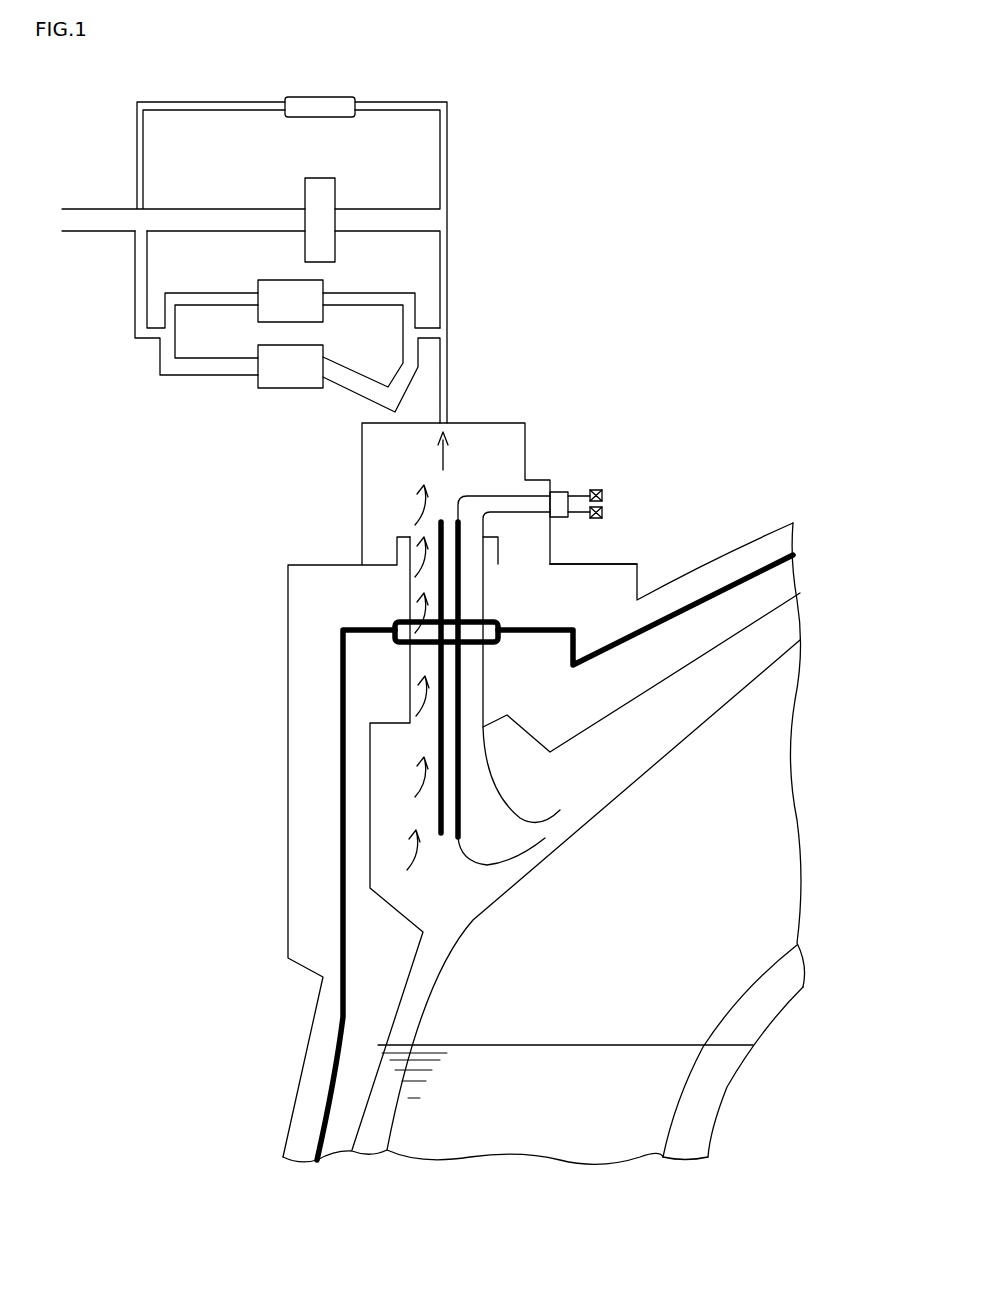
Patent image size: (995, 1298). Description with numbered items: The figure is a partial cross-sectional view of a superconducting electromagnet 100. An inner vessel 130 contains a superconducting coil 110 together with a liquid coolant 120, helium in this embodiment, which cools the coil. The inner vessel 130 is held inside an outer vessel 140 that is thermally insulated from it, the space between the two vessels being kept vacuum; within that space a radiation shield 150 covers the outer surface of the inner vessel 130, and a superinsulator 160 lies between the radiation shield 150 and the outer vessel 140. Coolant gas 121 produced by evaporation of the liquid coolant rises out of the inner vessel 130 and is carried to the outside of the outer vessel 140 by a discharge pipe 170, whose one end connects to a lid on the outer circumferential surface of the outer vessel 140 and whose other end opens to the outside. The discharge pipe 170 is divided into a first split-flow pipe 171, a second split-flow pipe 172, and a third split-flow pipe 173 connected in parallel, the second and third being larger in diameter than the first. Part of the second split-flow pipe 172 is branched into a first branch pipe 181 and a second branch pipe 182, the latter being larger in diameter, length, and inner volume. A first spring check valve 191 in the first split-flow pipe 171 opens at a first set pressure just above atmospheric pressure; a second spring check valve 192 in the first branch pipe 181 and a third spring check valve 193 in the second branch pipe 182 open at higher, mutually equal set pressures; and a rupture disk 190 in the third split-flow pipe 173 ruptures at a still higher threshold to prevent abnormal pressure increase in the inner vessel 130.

The superconducting electromagnet 100 is at (729, 205).
The superconducting coil 110 is at (765, 895).
The liquid coolant 120 is at (400, 1042).
The coolant gas 121 is at (410, 860).
The inner vessel 130 is at (370, 800).
The outer vessel 140 is at (288, 649).
The radiation shield 150 is at (343, 700).
The superinsulator 160 is at (580, 608).
The discharge pipe 170 is at (508, 148).
The first split-flow pipe 171 is at (449, 160).
The second split-flow pipe 172 is at (426, 324).
The third split-flow pipe 173 is at (400, 212).
The first branch pipe 181 is at (380, 292).
The second branch pipe 182 is at (360, 372).
The rupture disk 190 is at (316, 178).
The first spring check valve 191 is at (316, 96).
The second spring check valve 192 is at (278, 280).
The third spring check valve 193 is at (278, 345).